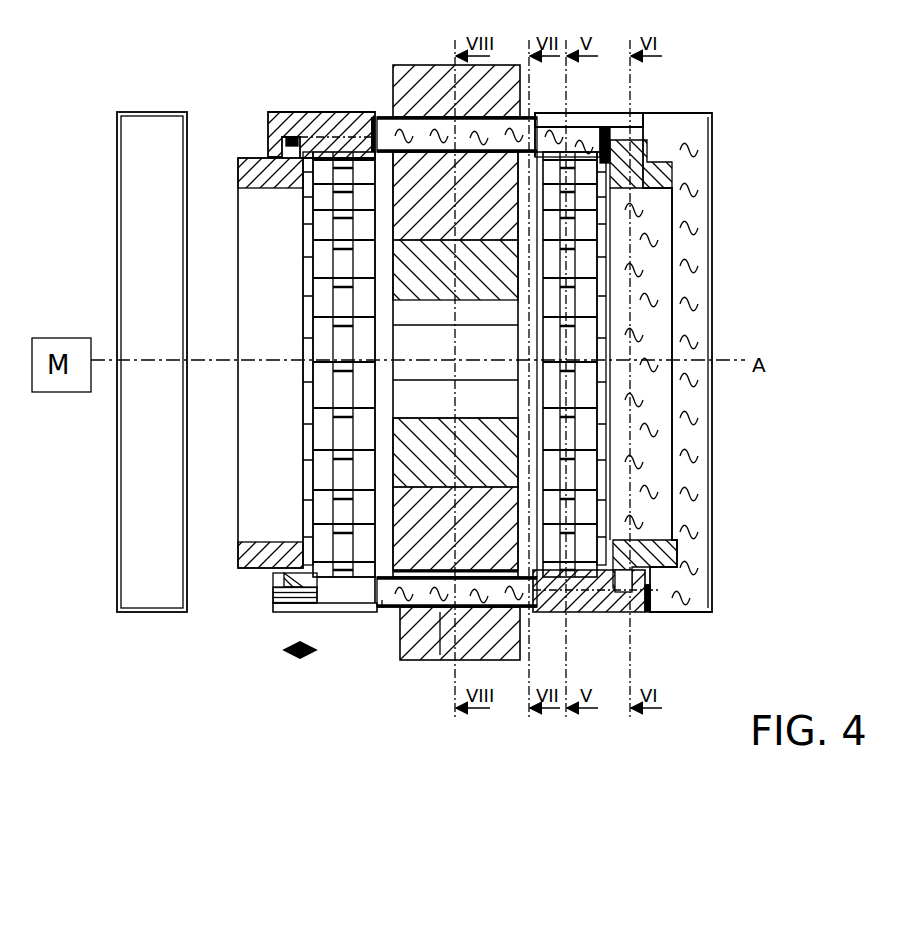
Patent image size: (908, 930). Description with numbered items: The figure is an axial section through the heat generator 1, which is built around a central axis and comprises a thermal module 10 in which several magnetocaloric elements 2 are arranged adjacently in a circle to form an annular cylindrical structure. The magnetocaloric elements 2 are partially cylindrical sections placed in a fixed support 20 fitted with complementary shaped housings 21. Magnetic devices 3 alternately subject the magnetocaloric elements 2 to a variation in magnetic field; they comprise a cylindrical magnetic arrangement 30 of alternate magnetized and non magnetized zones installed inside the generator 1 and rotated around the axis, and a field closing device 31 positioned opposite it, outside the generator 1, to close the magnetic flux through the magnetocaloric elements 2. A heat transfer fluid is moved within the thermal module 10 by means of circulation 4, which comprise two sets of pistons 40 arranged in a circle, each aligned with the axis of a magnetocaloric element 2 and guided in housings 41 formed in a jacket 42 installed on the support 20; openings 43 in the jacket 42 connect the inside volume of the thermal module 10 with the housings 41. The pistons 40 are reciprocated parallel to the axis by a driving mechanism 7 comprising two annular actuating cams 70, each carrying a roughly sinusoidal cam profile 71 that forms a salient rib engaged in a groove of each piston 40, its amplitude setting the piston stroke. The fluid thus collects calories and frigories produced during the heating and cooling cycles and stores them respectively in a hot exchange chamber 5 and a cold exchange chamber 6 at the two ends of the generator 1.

The heat generator 1 is at (806, 168).
The magnetocaloric elements 2 is at (381, 120).
The magnetic devices 3 is at (413, 676).
The means of circulation 4 is at (270, 108).
The hot exchange chamber 5 is at (116, 192).
The cold exchange chamber 6 is at (710, 150).
The driving mechanism 7 is at (243, 133).
The thermal module 10 is at (310, 678).
The fixed support 20 is at (540, 113).
The housings 21 is at (396, 637).
The magnetic arrangement 30 is at (403, 645).
The field closing device 31 is at (440, 652).
The pistons 40 is at (326, 130).
The housings of the pistons 41 is at (300, 589).
The jacket 42 is at (273, 612).
The openings 43 is at (348, 438).
The actuating cams 70 is at (655, 190).
The cam profile 71 is at (291, 150).